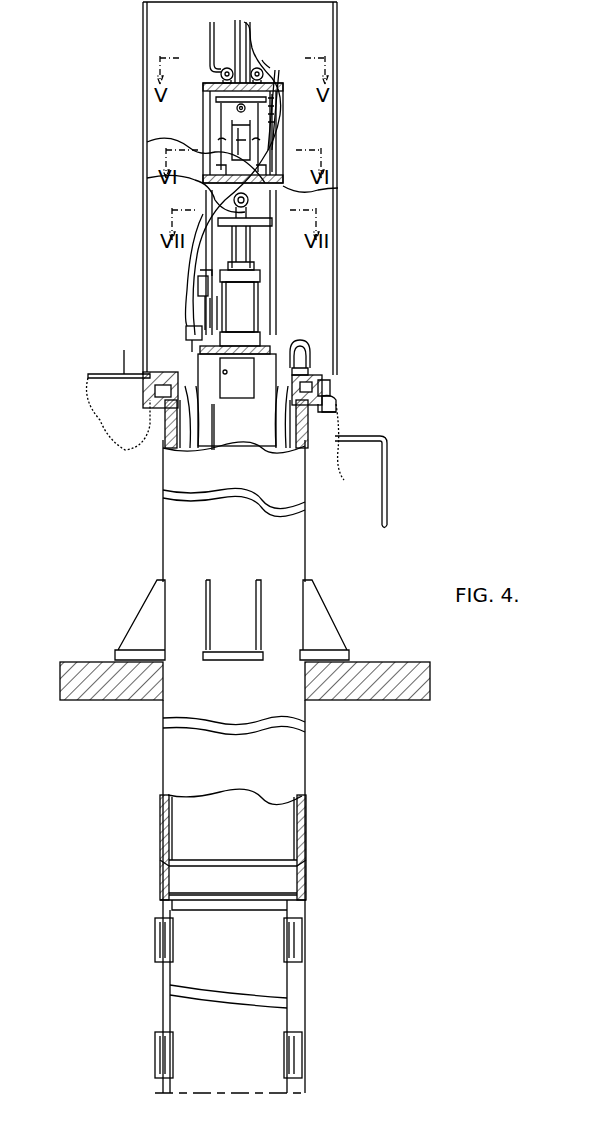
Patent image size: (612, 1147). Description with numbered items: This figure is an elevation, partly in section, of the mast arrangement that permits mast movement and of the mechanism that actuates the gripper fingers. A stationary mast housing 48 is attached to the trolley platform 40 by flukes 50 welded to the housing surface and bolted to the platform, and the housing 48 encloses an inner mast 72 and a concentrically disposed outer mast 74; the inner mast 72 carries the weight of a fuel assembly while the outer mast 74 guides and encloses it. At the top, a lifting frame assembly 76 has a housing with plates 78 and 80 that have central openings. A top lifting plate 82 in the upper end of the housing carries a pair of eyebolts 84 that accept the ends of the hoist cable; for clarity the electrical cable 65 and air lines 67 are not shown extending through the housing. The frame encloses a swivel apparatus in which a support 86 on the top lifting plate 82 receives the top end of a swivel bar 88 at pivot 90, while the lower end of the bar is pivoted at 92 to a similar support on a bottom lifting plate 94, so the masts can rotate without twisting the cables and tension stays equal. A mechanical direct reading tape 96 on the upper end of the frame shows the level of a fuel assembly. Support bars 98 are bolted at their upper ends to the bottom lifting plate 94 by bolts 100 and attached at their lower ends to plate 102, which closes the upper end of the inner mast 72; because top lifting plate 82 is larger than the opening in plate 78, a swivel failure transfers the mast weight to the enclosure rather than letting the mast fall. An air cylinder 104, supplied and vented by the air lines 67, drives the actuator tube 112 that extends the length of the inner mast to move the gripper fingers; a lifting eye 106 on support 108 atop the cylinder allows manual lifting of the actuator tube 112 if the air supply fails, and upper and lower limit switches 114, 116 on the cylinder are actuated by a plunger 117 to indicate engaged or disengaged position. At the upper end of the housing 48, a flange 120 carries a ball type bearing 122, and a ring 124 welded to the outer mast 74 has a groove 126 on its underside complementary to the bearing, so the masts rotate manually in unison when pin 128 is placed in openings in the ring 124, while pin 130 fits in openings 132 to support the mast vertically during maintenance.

The platform 40 is at (394, 672).
The mast housing 48 is at (306, 554).
The flukes 50 is at (138, 612).
The electrical cable 65 is at (244, 26).
The air lines 67 is at (246, 47).
The inner mast 72 is at (282, 438).
The outer mast 74 is at (298, 446).
The lifting frame assembly 76 is at (268, 130).
The plate 78 is at (275, 70).
The plate 80 is at (338, 188).
The top lifting plate 82 is at (268, 100).
The eyebolts 84 is at (258, 68).
The support 86 is at (203, 124).
The swivel bar 88 is at (236, 140).
The pivot 90 is at (228, 110).
The pivot 92 is at (246, 150).
The bottom lifting plate 94 is at (147, 178).
The mechanical direct reading tape 96 is at (210, 48).
The support bars 98 is at (270, 208).
The bolts 100 is at (147, 143).
The plate 102 is at (272, 350).
The air cylinder 104 is at (262, 300).
The lifting eye 106 is at (234, 200).
The support 108 is at (190, 264).
The actuator tube 112 is at (237, 430).
The upper limit switch 114 is at (198, 274).
The lower limit switch 116 is at (186, 340).
The plunger 117 is at (205, 298).
The flange 120 is at (336, 412).
The ball type bearing 122 is at (336, 404).
The ring 124 is at (328, 372).
The groove 126 is at (330, 388).
The pin 128 is at (124, 362).
The pin 130 is at (388, 478).
The openings 132 is at (210, 432).